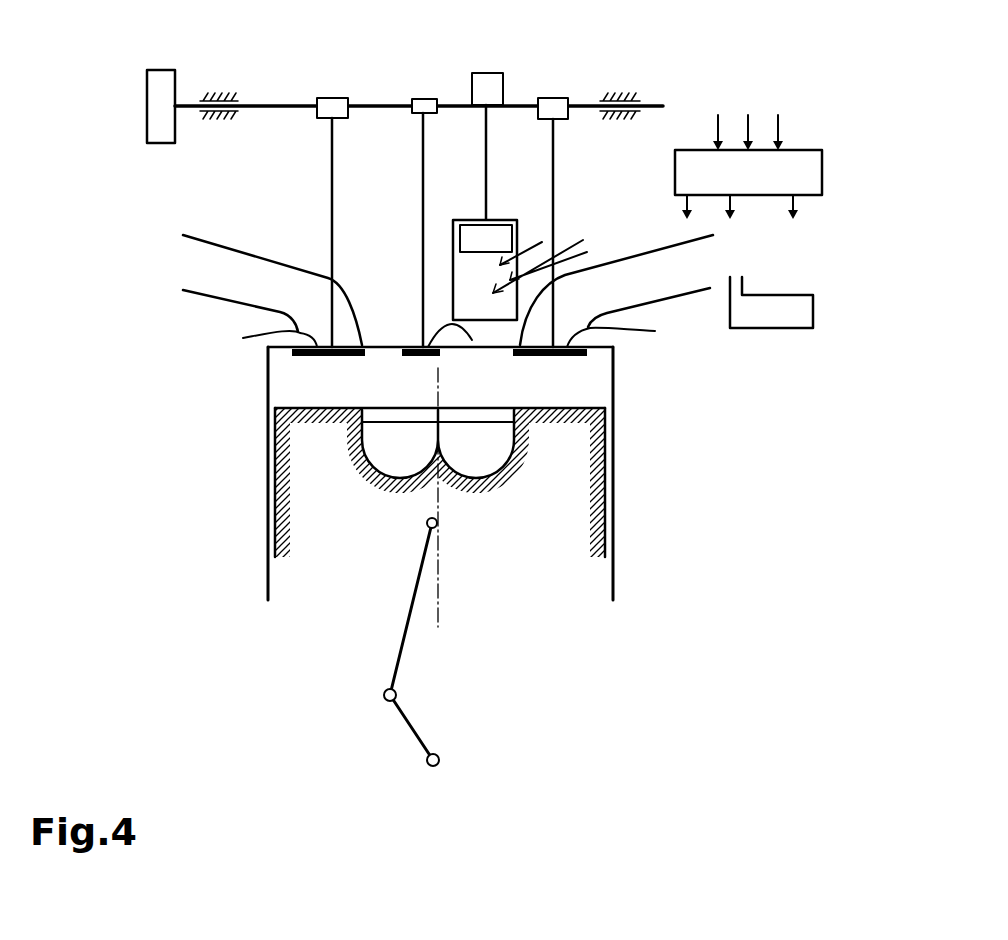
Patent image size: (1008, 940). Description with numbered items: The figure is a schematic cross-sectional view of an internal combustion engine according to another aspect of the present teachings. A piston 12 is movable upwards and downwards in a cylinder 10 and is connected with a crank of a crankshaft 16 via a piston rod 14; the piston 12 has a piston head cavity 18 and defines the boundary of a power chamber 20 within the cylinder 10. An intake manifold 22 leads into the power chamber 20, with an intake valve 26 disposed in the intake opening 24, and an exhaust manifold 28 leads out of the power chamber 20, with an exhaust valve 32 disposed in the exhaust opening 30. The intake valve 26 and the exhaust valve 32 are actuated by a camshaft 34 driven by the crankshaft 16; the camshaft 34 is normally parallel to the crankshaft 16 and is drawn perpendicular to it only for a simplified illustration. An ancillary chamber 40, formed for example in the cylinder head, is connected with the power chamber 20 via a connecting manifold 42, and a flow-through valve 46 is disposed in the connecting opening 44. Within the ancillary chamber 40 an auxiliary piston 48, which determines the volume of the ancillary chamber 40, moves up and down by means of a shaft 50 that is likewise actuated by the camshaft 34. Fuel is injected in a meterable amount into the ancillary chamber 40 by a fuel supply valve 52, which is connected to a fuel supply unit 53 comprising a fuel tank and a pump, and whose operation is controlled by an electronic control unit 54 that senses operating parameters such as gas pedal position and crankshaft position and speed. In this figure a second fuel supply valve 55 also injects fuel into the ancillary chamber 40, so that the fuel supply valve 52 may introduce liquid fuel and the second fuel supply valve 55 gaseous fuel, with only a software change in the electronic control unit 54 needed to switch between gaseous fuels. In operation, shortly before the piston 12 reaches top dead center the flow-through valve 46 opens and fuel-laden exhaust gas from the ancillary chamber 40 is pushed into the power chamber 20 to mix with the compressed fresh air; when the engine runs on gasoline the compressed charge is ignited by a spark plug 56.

The cylinder 10 is at (622, 388).
The piston 12 is at (600, 518).
The piston rod 14 is at (408, 610).
The crankshaft 16 is at (413, 725).
The piston head cavity 18 is at (482, 447).
The power chamber 20 is at (323, 389).
The intake manifold 22 is at (232, 262).
The intake opening 24 is at (250, 318).
The intake valve 26 is at (333, 143).
The exhaust manifold 28 is at (640, 277).
The exhaust opening 30 is at (638, 317).
The exhaust valve 32 is at (555, 140).
The camshaft 34 is at (278, 102).
The ancillary chamber 40 is at (487, 275).
The connecting manifold 42 is at (432, 345).
The connecting opening 44 is at (410, 345).
The flow-through valve 46 is at (423, 135).
The auxiliary piston 48 is at (493, 243).
The shaft 50 is at (487, 135).
The fuel supply valve 52 is at (573, 242).
The fuel supply unit 53 is at (790, 313).
The electronic control unit 54 is at (803, 172).
The second fuel supply valve 55 is at (522, 245).
The spark plug 56 is at (363, 345).